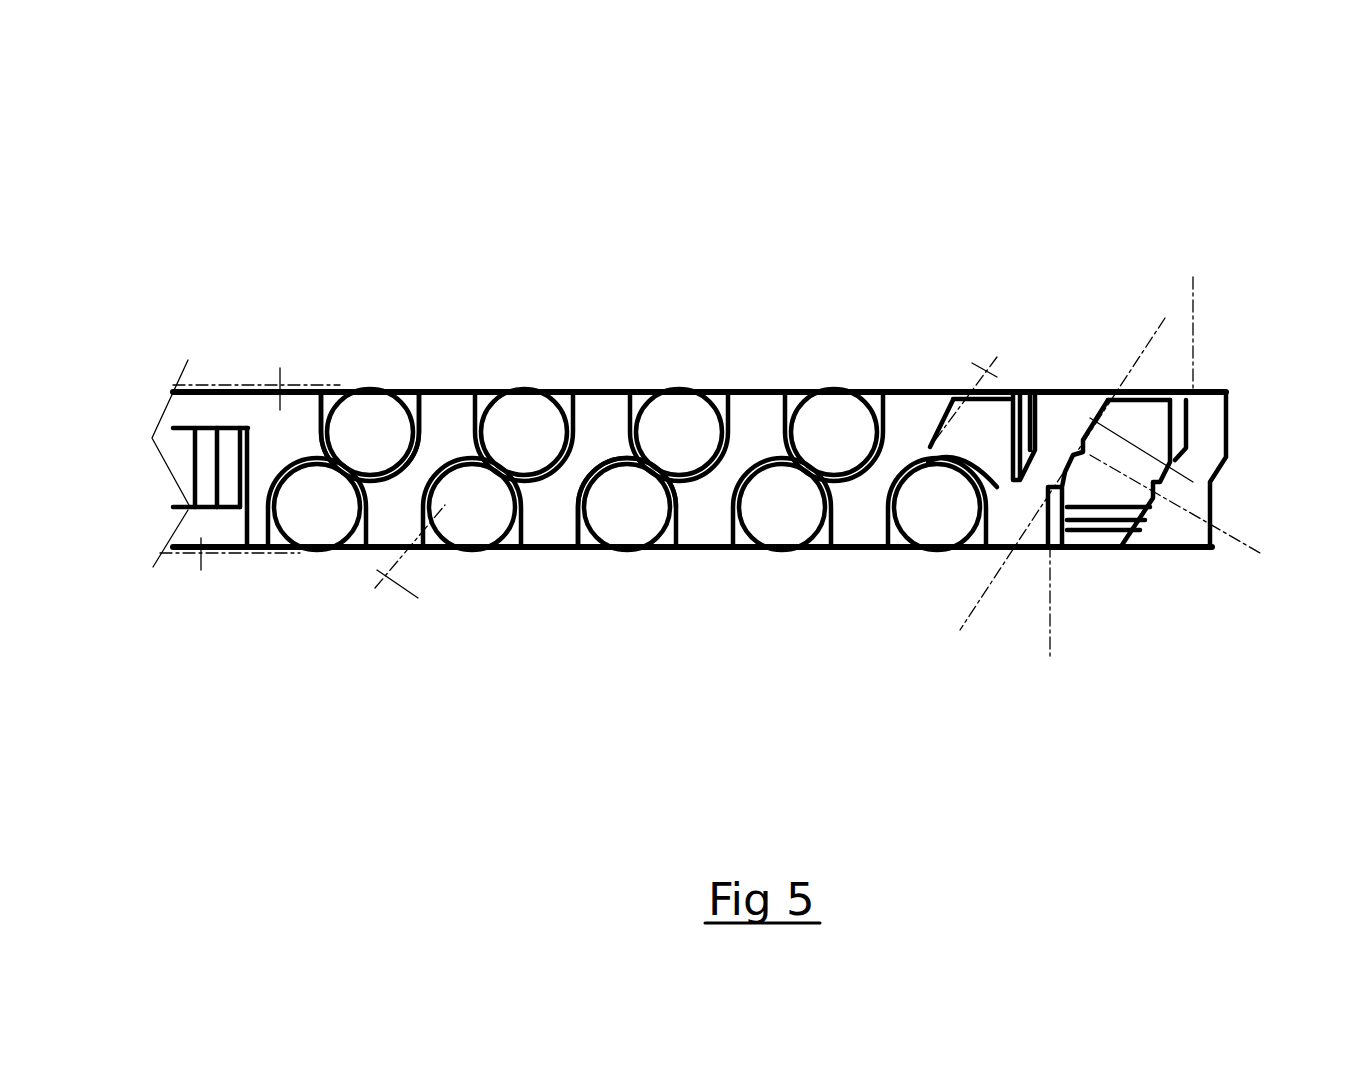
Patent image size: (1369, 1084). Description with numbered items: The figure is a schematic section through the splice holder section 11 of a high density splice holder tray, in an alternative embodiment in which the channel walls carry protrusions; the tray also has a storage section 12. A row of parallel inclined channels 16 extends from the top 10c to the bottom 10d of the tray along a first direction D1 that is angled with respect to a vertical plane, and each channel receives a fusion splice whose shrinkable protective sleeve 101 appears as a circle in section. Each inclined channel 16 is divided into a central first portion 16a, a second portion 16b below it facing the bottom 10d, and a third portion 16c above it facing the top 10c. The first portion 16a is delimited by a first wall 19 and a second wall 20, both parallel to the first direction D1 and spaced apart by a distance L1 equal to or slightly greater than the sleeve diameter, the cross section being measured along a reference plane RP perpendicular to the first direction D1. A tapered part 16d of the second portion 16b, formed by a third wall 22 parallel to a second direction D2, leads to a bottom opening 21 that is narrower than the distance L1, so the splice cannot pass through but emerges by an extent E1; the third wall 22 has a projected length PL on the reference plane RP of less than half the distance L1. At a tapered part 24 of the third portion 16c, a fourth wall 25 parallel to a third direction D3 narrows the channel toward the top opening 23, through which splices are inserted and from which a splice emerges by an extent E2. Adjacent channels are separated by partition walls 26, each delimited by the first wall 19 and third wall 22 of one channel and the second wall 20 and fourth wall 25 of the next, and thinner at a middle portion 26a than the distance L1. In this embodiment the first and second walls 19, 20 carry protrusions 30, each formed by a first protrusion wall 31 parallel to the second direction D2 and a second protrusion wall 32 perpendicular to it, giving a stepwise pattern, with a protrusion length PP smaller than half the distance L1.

The top of the splice holder tray 10c is at (455, 392).
The bottom of the splice holder tray 10d is at (363, 547).
The splice holder section 11 is at (808, 354).
The storage section 12 is at (205, 376).
The inclined channel 16 is at (373, 470).
The first portion 16a is at (311, 435).
The second portion 16b is at (290, 547).
The third portion 16c is at (407, 403).
The tapered part of the second portion 16d is at (888, 540).
The first wall 19 is at (772, 403).
The second wall 20 is at (843, 517).
The bottom opening 21 is at (450, 547).
The third wall 22 is at (740, 525).
The top opening 23 is at (873, 400).
The tapered part of the third portion 24 is at (1052, 410).
The fourth wall 25 is at (888, 410).
The partition wall 26 is at (457, 430).
The middle portion of the partition wall 26a is at (587, 462).
The protrusion 30 is at (617, 447).
The first protrusion wall 31 is at (997, 493).
The second protrusion wall 32 is at (998, 487).
The shrinkable protective sleeve 101 is at (527, 425).
The extent E1 is at (200, 552).
The extent E2 is at (277, 392).
The projected length PL is at (397, 587).
The protrusion length PP is at (987, 363).
The first direction D1 is at (1150, 345).
The second direction D2 is at (1048, 645).
The third direction D3 is at (1193, 302).
The reference plane RP is at (1242, 542).
The distance L1 is at (1143, 447).